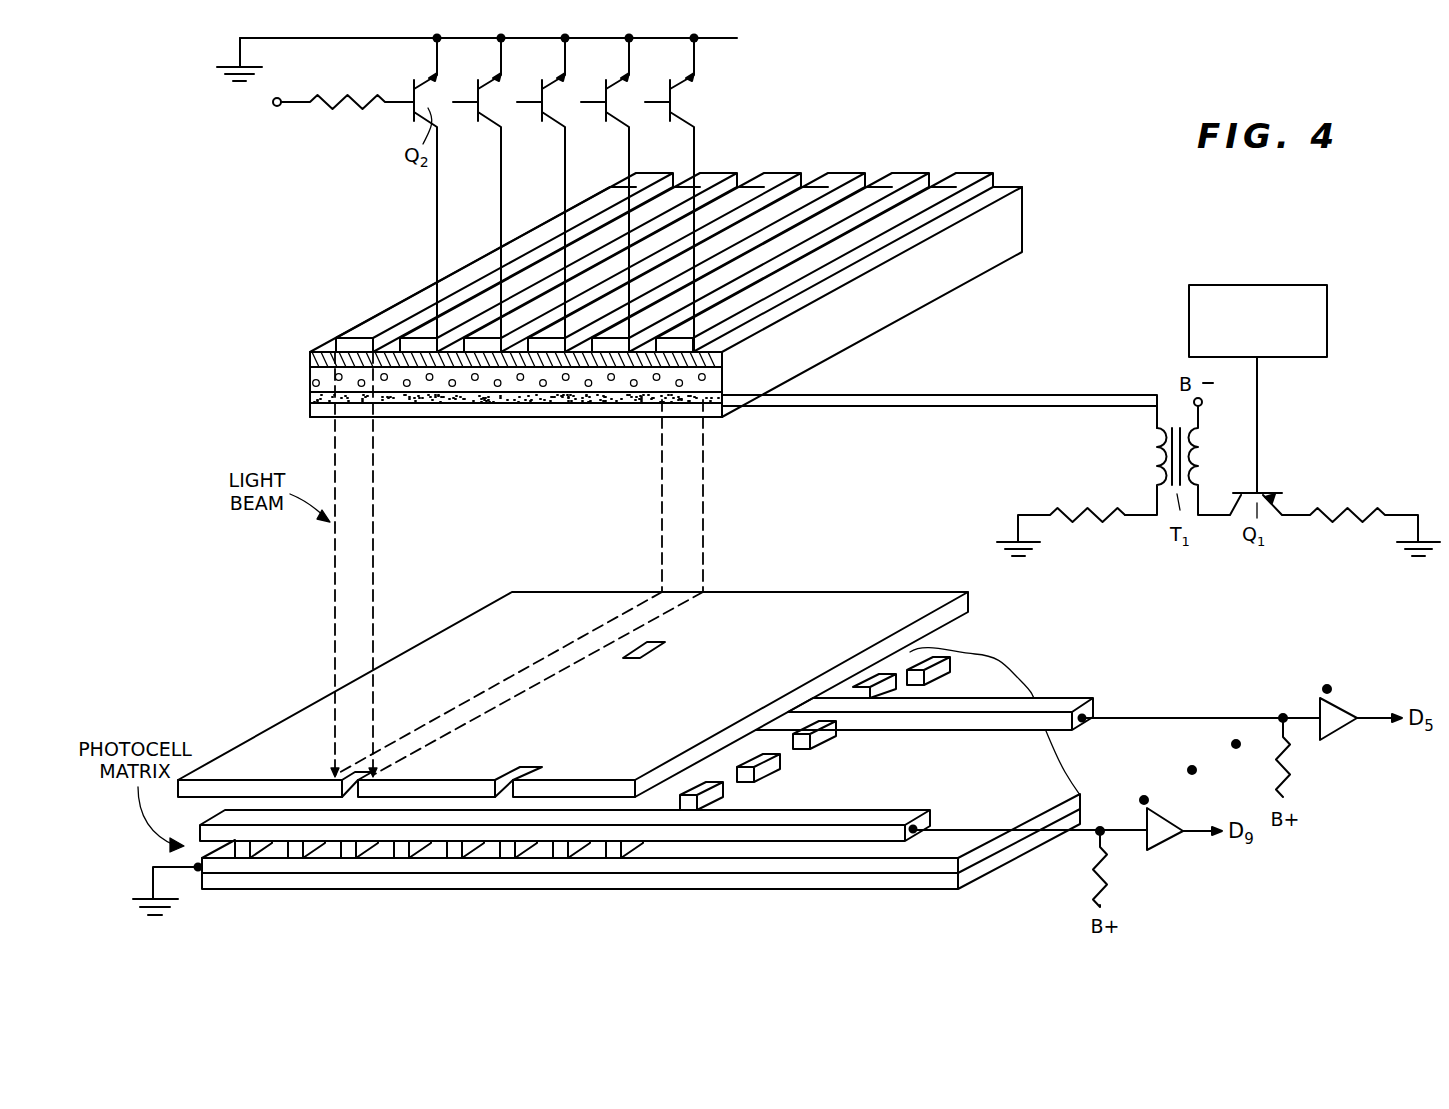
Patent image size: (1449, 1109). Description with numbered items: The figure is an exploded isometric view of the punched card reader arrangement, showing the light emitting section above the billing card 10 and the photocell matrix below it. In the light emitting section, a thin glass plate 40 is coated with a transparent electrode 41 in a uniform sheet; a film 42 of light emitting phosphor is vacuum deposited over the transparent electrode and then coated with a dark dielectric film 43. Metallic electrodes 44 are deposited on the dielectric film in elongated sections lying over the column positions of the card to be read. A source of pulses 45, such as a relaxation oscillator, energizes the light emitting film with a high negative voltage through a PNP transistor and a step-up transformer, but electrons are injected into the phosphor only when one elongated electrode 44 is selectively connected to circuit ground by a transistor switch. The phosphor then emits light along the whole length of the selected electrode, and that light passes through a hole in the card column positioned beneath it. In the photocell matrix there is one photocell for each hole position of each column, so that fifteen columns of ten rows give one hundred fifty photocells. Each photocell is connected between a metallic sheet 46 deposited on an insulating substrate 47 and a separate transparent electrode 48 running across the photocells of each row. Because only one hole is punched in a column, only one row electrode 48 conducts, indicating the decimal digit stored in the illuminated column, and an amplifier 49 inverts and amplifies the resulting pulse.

The billing card 10 is at (246, 753).
The thin glass plate 40 is at (634, 408).
The transparent electrode 41 is at (569, 398).
The film of light emitting phosphor 42 is at (310, 382).
The dark dielectric film 43 is at (316, 362).
The metallic electrodes 44 is at (378, 321).
The source of pulses 45 is at (1263, 286).
The metallic sheet 46 is at (648, 865).
The insulating substrate 47 is at (708, 880).
The transparent electrode 48 is at (829, 818).
The amplifier 49 is at (1168, 836).